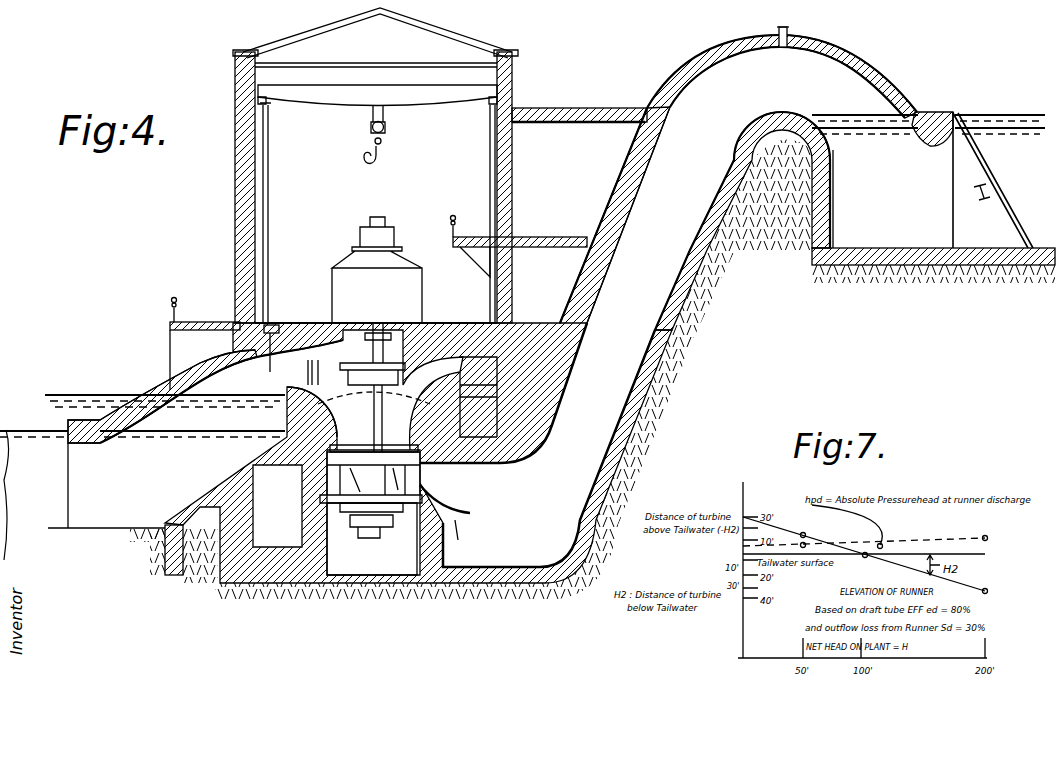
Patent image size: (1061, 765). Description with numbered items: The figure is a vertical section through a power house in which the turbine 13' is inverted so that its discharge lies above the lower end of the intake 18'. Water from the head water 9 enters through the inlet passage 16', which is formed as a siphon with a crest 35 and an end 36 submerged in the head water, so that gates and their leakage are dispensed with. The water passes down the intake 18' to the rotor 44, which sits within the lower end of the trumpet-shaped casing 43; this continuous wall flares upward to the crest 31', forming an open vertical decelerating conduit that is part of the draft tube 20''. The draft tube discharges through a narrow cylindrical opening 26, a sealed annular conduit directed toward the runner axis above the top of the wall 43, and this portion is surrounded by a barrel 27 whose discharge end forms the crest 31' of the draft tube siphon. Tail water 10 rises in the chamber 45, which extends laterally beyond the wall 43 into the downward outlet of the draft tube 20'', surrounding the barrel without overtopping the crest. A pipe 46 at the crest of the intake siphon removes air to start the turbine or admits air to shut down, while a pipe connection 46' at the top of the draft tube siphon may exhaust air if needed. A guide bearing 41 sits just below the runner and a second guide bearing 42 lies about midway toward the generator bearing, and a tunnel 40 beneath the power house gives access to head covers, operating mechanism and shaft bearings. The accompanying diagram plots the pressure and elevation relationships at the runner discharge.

The head water 9 is at (1010, 128).
The tail water 10 is at (102, 393).
The turbine 13' is at (399, 474).
The inlet passage 16' is at (933, 188).
The intake 18' is at (738, 206).
The draft tube 20'' is at (197, 458).
The cylindrical opening 26 is at (467, 378).
The barrel 27 is at (463, 397).
The crest 31' is at (143, 405).
The crest 35 is at (781, 110).
The end 36 is at (944, 143).
The tunnel 40 is at (378, 560).
The guide bearing 41 is at (357, 505).
The second guide bearing 42 is at (324, 412).
The trumpet-shaped casing 43 is at (411, 426).
The rotor 44 is at (456, 512).
The chamber 45 is at (217, 403).
The pipe 46 is at (803, 25).
The pipe connection 46' is at (290, 332).